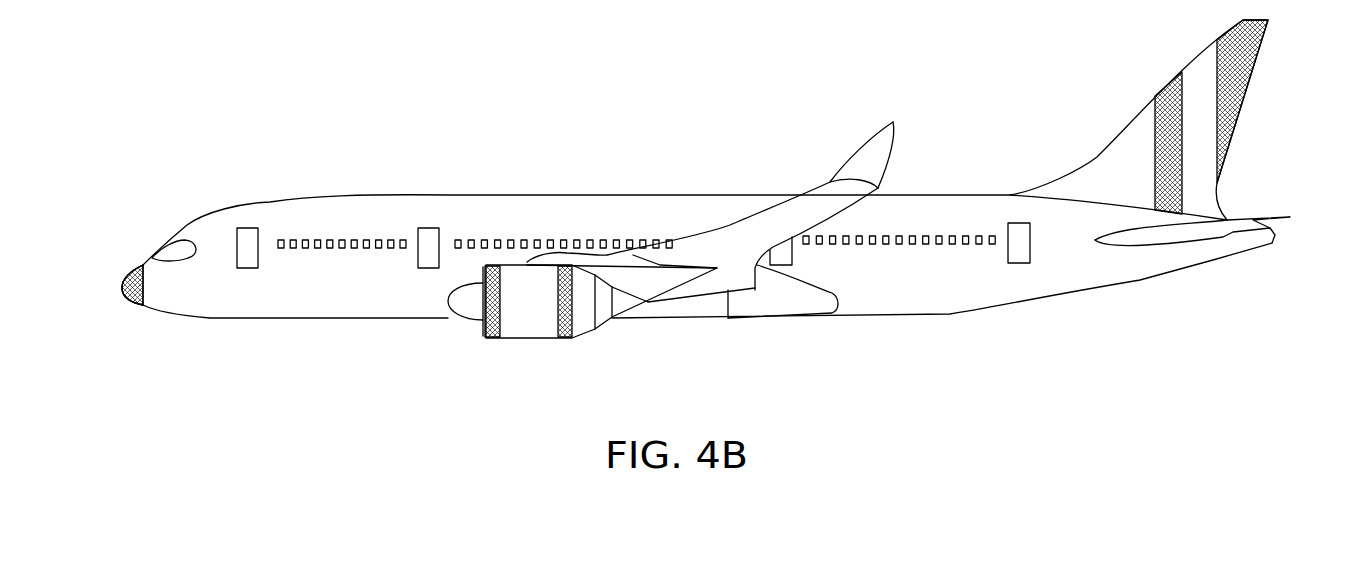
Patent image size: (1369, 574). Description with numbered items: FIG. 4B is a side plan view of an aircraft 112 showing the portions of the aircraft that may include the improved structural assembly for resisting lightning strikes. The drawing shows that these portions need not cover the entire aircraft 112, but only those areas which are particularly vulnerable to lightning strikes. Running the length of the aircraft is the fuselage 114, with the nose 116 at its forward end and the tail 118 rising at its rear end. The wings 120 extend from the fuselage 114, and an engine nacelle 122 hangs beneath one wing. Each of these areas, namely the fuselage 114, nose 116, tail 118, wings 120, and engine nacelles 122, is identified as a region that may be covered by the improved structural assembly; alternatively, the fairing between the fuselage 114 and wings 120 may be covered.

The aircraft 112 is at (710, 235).
The fuselage 114 is at (706, 206).
The nose 116 is at (100, 238).
The tail 118 is at (1186, 120).
The wings 120 is at (714, 220).
The engine nacelles 122 is at (548, 358).